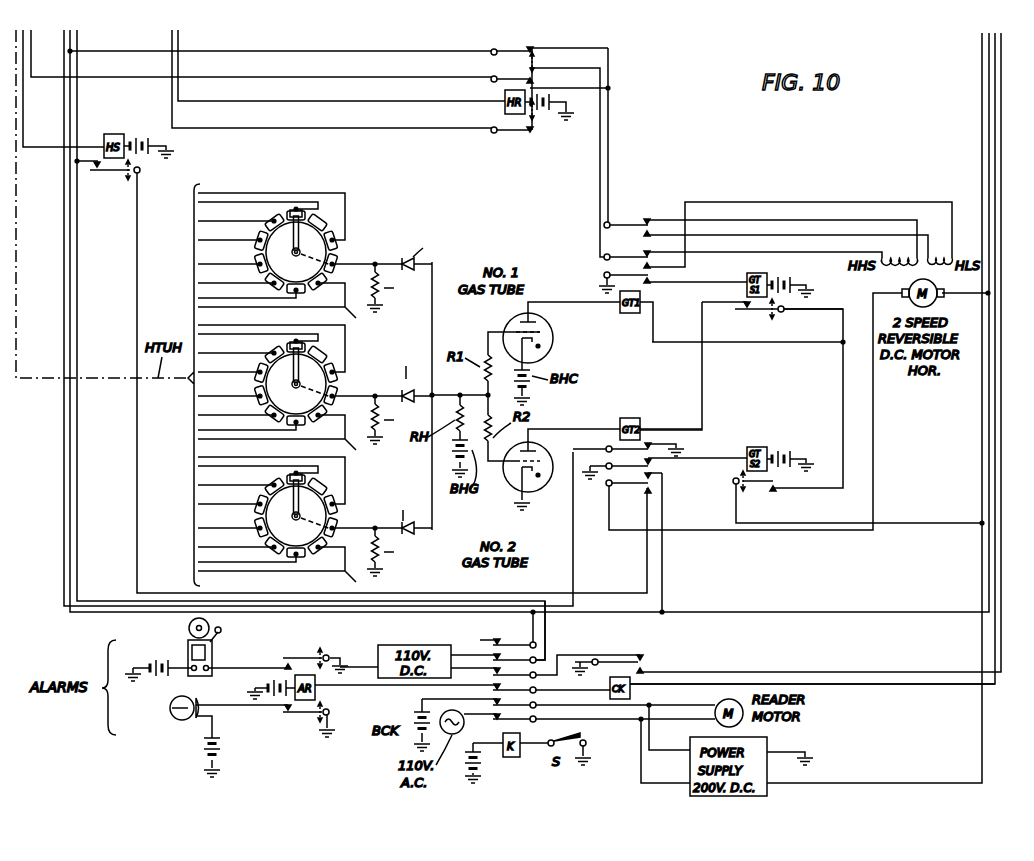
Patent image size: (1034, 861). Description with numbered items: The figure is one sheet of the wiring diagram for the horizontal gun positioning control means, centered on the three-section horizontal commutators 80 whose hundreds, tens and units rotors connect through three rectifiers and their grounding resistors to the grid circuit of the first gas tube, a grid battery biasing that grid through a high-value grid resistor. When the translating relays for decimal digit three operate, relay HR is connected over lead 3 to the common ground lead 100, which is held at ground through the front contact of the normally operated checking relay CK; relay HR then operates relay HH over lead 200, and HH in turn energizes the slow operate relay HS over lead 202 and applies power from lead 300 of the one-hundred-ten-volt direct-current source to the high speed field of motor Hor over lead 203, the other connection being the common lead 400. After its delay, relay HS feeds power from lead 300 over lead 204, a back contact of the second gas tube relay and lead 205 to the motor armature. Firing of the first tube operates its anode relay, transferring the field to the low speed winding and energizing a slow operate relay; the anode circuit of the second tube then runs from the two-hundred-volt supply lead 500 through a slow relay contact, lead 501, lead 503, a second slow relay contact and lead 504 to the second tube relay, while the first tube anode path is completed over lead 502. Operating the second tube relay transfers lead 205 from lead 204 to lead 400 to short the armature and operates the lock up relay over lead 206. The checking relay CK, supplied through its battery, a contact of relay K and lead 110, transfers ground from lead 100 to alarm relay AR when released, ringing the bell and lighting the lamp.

The lead 3 is at (179, 41).
The horizontal commutators 80 is at (336, 377).
The common ground lead 100 is at (1000, 442).
The lead 110 is at (883, 686).
The lead 200 is at (172, 41).
The lead 202 is at (24, 103).
The lead 203 is at (281, 77).
The lead 204 is at (136, 244).
The lead 205 is at (705, 531).
The lead 206 is at (63, 531).
The lead of the 110-volt direct-current source 300 is at (78, 41).
The common lead 400 is at (103, 53).
The 200-volt D.-C. supply lead 500 is at (918, 523).
The lead 501 is at (842, 387).
The lead 502 is at (762, 345).
The lead 503 is at (830, 312).
The lead 504 is at (704, 387).